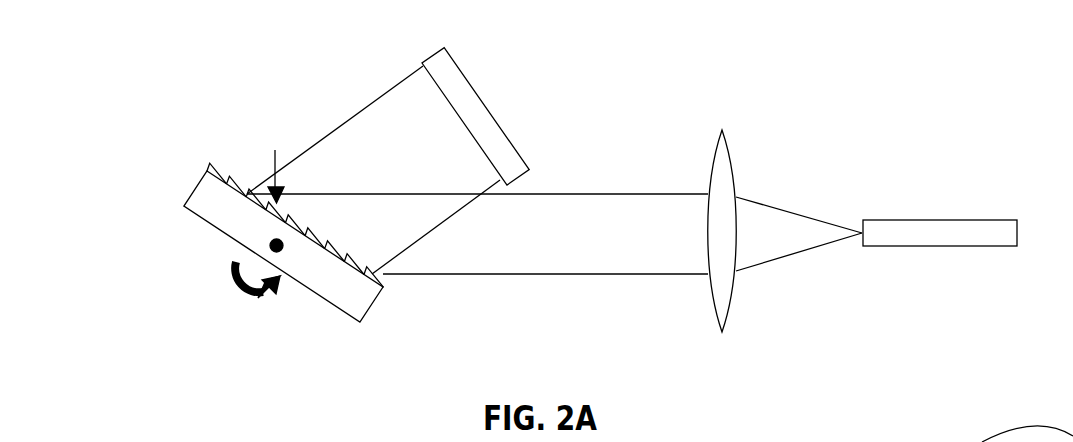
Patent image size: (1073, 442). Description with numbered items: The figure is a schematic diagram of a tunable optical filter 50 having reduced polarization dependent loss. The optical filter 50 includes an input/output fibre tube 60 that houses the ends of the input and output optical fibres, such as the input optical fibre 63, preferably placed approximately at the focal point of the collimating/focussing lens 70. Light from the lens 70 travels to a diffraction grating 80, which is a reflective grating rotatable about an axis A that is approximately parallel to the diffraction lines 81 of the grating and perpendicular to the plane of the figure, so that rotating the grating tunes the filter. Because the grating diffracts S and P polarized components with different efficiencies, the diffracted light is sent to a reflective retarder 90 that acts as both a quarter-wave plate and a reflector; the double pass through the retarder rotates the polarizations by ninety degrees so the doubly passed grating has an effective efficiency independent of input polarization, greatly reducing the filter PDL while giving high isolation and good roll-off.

The optical filter 50 is at (698, 76).
The input/output fibre tube 60 is at (919, 220).
The input optical fibre 63 is at (1072, 418).
The collimating/focussing lens 70 is at (723, 332).
The diffraction grating 80 is at (373, 302).
The diffraction lines 81 is at (275, 155).
The reflective retarder 90 is at (452, 55).
The axis A is at (270, 247).